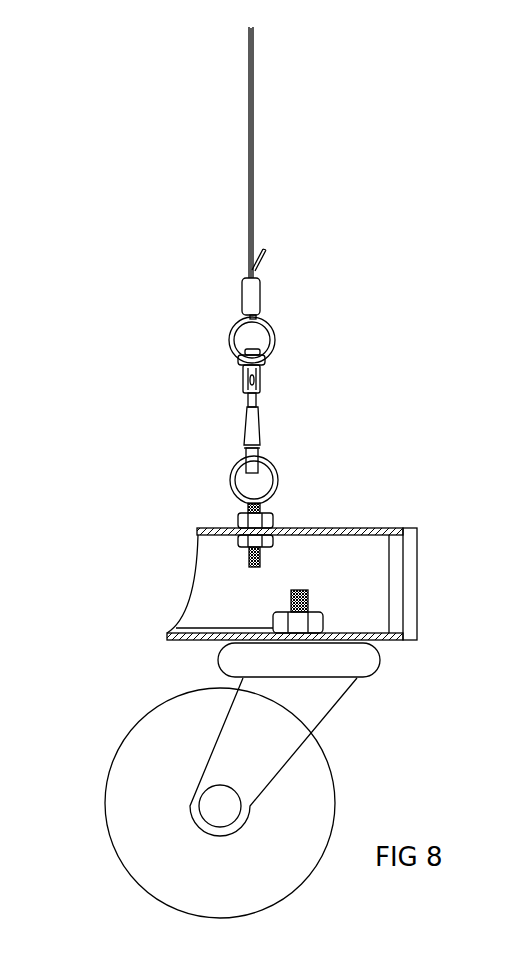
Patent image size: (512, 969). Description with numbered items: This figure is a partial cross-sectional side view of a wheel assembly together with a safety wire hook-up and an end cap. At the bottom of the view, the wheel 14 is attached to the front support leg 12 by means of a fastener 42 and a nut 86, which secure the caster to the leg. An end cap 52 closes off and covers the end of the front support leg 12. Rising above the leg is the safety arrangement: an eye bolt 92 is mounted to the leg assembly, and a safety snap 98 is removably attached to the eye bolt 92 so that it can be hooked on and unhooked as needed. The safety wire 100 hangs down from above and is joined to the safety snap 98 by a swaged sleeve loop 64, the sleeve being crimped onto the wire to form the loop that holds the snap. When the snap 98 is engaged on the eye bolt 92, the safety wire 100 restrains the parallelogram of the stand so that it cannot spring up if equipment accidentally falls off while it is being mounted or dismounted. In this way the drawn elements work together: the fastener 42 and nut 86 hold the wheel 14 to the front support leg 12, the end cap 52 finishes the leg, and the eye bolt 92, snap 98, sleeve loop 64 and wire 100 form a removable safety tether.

The safety wire 100 is at (254, 165).
The swaged sleeve loop 64 is at (258, 298).
The safety snap 98 is at (243, 432).
The eye bolt 92 is at (262, 462).
The front support leg 12 is at (210, 598).
The nut 86 is at (180, 627).
The end cap 52 is at (410, 578).
The fastener 42 is at (302, 590).
The wheel 14 is at (305, 785).